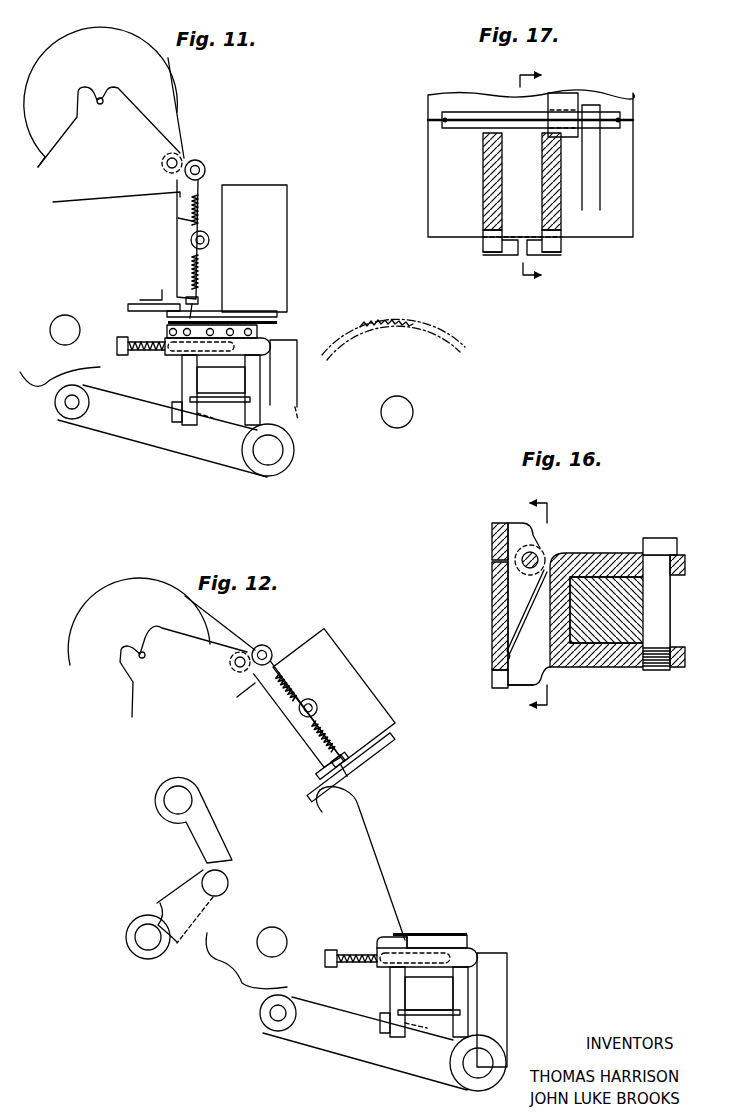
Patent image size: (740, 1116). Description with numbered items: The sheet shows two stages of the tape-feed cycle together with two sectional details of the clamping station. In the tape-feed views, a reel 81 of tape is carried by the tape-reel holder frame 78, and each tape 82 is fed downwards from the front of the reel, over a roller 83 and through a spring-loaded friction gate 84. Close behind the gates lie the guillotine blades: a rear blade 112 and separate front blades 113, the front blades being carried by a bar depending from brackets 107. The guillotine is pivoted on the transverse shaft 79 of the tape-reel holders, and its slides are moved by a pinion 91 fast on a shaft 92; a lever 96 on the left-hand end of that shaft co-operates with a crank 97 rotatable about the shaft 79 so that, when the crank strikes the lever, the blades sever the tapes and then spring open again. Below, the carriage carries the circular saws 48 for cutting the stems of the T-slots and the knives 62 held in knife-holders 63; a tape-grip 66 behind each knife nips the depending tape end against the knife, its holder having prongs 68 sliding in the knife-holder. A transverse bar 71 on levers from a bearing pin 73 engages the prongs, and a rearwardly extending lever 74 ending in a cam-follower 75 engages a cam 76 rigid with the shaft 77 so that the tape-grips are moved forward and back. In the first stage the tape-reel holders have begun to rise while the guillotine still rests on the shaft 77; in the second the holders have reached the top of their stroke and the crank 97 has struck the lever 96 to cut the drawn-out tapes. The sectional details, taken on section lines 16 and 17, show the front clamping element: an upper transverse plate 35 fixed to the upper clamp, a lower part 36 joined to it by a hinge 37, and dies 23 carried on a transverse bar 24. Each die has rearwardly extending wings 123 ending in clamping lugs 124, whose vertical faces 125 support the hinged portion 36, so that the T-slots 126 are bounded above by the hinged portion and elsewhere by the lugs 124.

In FIG. 11, the reel of tape 81 is at (172, 68).
In FIG. 12, the reel of tape 81 is at (80, 615).
In FIG. 11, the tape-reel holder frame 78 is at (138, 98).
In FIG. 11, the tape 82 is at (182, 120).
In FIG. 12, the tape 82 is at (225, 627).
In FIG. 11, the roller 83 is at (161, 163).
In FIG. 11, the friction gate 84 is at (175, 240).
In FIG. 12, the friction gate 84 is at (287, 717).
In FIG. 11, the bracket 107 is at (282, 238).
In FIG. 12, the bracket 107 is at (334, 695).
In FIG. 11, the rear blade 112 is at (162, 292).
In FIG. 12, the rear blade 112 is at (323, 768).
In FIG. 11, the front blade 113 is at (216, 311).
In FIG. 12, the front blade 113 is at (327, 808).
In FIG. 11, the tape-grip 66 is at (167, 328).
In FIG. 12, the tape-grip 66 is at (400, 937).
In FIG. 11, the knife 62 is at (263, 322).
In FIG. 12, the knife 62 is at (427, 937).
In FIG. 11, the circular saw 48 is at (357, 330).
In FIG. 11, the knife-holder 63 is at (184, 375).
In FIG. 12, the knife-holder 63 is at (424, 1002).
In FIG. 11, the prong 68 is at (247, 348).
In FIG. 12, the prong 68 is at (457, 962).
In FIG. 11, the transverse bar 71 is at (277, 353).
In FIG. 12, the transverse bar 71 is at (495, 957).
In FIG. 11, the bearing pin 73 is at (283, 450).
In FIG. 12, the bearing pin 73 is at (478, 1063).
In FIG. 11, the lever 74 is at (122, 435).
In FIG. 12, the lever 74 is at (320, 1038).
In FIG. 11, the cam-follower 75 is at (56, 418).
In FIG. 12, the cam-follower 75 is at (260, 1018).
In FIG. 11, the cam 76 is at (43, 387).
In FIG. 12, the cam 76 is at (238, 980).
In FIG. 11, the shaft 77 is at (68, 316).
In FIG. 12, the shaft 77 is at (257, 940).
In FIG. 12, the shaft 92 is at (170, 800).
In FIG. 12, the lever 96 is at (227, 837).
In FIG. 12, the crank 97 is at (177, 887).
In FIG. 12, the pinion 91 is at (185, 906).
In FIG. 12, the transverse shaft 79 is at (142, 936).
In FIG. 17, the transverse plate 35 is at (428, 98).
In FIG. 16, the transverse plate 35 is at (492, 538).
In FIG. 17, the lower part 36 is at (428, 187).
In FIG. 16, the lower part 36 is at (492, 597).
In FIG. 17, the hinge 37 is at (473, 130).
In FIG. 16, the hinge 37 is at (542, 553).
In FIG. 17, the wing 123 is at (543, 200).
In FIG. 16, the wing 123 is at (523, 673).
In FIG. 17, the clamping lug 124 is at (487, 254).
In FIG. 16, the clamping lug 124 is at (492, 686).
In FIG. 17, the T-slot 126 is at (523, 240).
In FIG. 16, the vertical face 125 is at (527, 615).
In FIG. 16, the transverse bar 24 is at (637, 608).
In FIG. 16, the die 23 is at (600, 660).
In FIG. 17, the section line 16— 16 is at (543, 175).
In FIG. 16, the section line 17— 17 is at (538, 604).